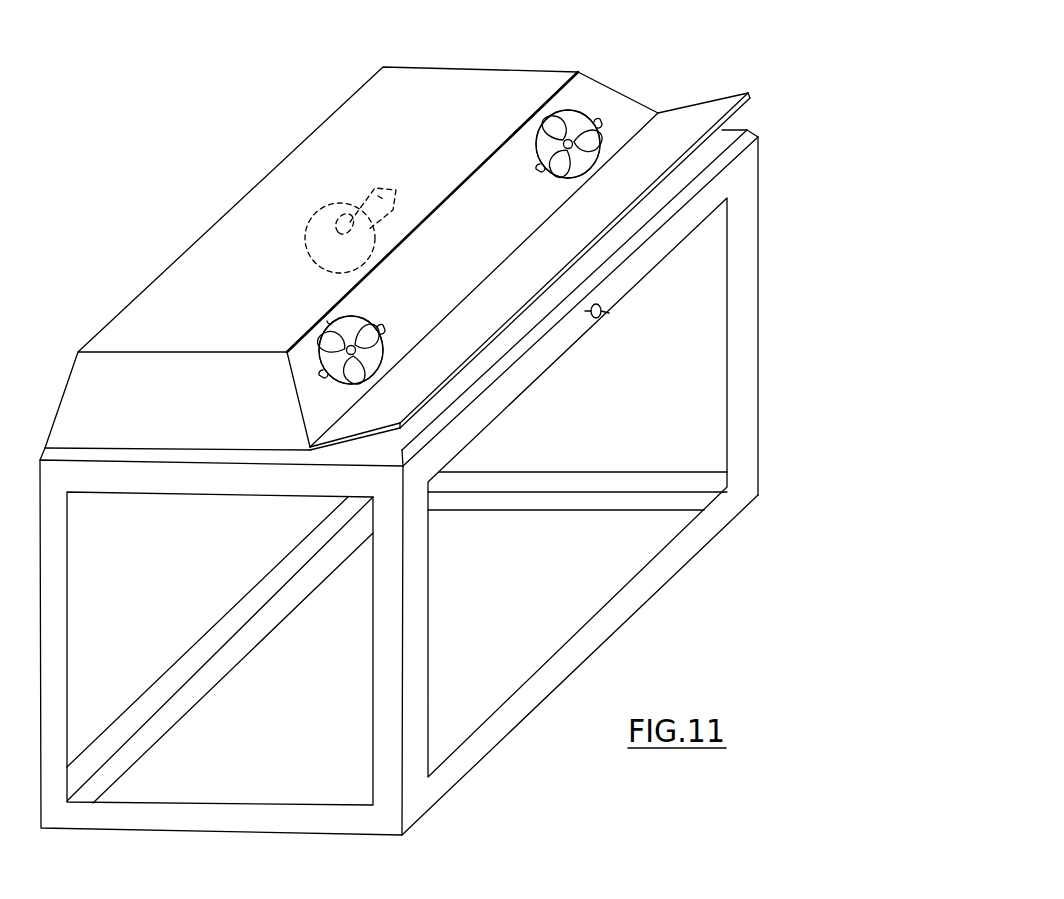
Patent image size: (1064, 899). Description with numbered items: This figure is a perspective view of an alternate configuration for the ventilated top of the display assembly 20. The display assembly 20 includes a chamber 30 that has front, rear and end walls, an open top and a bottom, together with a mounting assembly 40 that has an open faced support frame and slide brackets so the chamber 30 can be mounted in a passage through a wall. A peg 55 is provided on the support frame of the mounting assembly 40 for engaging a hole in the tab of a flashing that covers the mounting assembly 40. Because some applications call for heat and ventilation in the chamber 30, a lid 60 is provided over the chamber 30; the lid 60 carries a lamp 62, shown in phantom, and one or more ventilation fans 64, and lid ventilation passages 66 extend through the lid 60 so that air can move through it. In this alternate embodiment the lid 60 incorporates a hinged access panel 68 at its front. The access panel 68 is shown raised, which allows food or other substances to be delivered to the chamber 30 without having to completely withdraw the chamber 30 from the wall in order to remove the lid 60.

The display assembly 20 is at (446, 482).
The chamber 30 is at (682, 311).
The mounting assembly 40 is at (742, 435).
The peg 55 is at (609, 313).
The lid 60 is at (272, 205).
The lamp 62 is at (322, 249).
The ventilation fans 64 is at (545, 143).
The lid ventilation passages 66 is at (572, 183).
The hinged access panel 68 is at (697, 120).